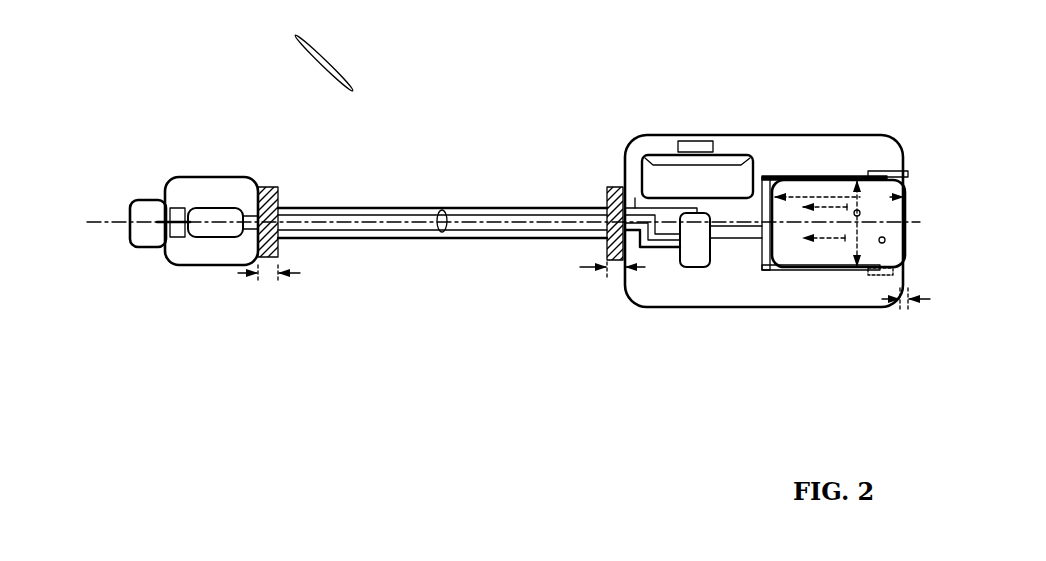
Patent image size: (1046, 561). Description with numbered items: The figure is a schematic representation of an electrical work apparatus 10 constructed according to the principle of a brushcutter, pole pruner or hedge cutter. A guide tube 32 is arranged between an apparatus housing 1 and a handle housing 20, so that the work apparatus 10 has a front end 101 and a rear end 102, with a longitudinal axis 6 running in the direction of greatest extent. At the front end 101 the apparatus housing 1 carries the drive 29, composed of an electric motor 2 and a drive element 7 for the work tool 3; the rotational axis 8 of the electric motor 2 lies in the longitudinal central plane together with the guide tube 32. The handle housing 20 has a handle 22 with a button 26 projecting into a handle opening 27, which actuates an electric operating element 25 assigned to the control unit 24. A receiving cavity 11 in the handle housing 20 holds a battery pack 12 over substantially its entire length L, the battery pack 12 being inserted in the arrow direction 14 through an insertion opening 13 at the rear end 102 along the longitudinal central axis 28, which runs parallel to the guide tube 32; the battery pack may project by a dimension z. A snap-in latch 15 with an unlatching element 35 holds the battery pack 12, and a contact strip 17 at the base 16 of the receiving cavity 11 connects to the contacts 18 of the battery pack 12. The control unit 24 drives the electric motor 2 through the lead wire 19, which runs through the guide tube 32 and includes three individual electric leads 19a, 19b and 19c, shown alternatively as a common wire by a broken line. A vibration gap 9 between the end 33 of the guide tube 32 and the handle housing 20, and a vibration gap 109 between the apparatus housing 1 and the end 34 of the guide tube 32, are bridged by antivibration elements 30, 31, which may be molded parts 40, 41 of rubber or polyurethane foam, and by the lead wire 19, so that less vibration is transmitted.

The apparatus housing 1 is at (176, 178).
The electric motor 2 is at (203, 208).
The work tool 3 is at (140, 240).
The longitudinal axis 6 is at (95, 225).
The drive element 7 is at (177, 238).
The rotational axis 8 is at (218, 222).
The vibration gap 9 is at (606, 262).
The electrical work apparatus 10 is at (403, 120).
The receiving cavity 11 is at (800, 184).
The battery pack 12 is at (885, 240).
The insertion opening 13 is at (860, 212).
The arrow direction 14 is at (857, 337).
The snap-in latch 15 is at (875, 172).
The base 16 is at (762, 266).
The contact strip 17 is at (766, 250).
The contacts 18 is at (783, 245).
The lead wire 19 is at (445, 211).
The electric lead 19a is at (372, 209).
The electric lead 19b is at (510, 222).
The electric lead 19c is at (487, 233).
The handle housing 20 is at (668, 308).
The handle 22 is at (745, 148).
The control unit 24 is at (697, 257).
The electric operating element 25 is at (690, 141).
The button 26 is at (720, 178).
The handle opening 27 is at (648, 173).
The longitudinal central axis 28 is at (880, 274).
The drive 29 is at (195, 250).
The antivibration element 30 is at (606, 187).
The antivibration element 31 is at (272, 192).
The guide tube 32 is at (455, 238).
The end of guide tube 33 is at (606, 207).
The end of guide tube 34 is at (288, 209).
The unlatching element 35 is at (905, 172).
The molded part 40 is at (615, 262).
The molded part 41 is at (272, 260).
The front end 101 is at (150, 176).
The rear end 102 is at (898, 140).
The vibration gap 109 is at (262, 262).